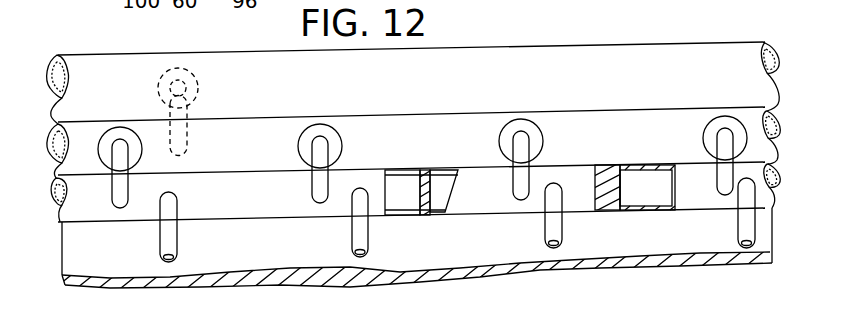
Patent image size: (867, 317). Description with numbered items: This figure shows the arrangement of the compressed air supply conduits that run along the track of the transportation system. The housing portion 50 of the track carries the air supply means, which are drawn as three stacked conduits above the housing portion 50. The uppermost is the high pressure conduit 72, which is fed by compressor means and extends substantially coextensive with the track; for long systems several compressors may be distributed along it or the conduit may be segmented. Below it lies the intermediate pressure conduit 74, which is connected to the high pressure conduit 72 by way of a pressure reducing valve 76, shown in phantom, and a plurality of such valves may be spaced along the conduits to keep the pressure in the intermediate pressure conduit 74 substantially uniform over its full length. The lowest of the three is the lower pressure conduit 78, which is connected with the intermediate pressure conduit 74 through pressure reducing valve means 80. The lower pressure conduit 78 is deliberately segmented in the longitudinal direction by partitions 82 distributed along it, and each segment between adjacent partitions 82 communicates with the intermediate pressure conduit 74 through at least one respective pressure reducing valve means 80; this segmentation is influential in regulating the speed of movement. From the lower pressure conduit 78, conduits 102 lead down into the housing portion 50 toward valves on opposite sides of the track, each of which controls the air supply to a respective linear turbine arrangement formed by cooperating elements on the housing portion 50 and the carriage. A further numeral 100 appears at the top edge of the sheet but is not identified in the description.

The housing portion 50 is at (62, 247).
The high pressure conduit 72 is at (713, 48).
The intermediate pressure conduit 74 is at (673, 117).
The pressure reducing valve 76 is at (200, 85).
The lower pressure conduit 78 is at (643, 168).
The pressure reducing valve means 80 is at (125, 133).
The partitions 82 is at (447, 172).
The element 100 is at (535, 6).
The conduits 102 is at (352, 238).